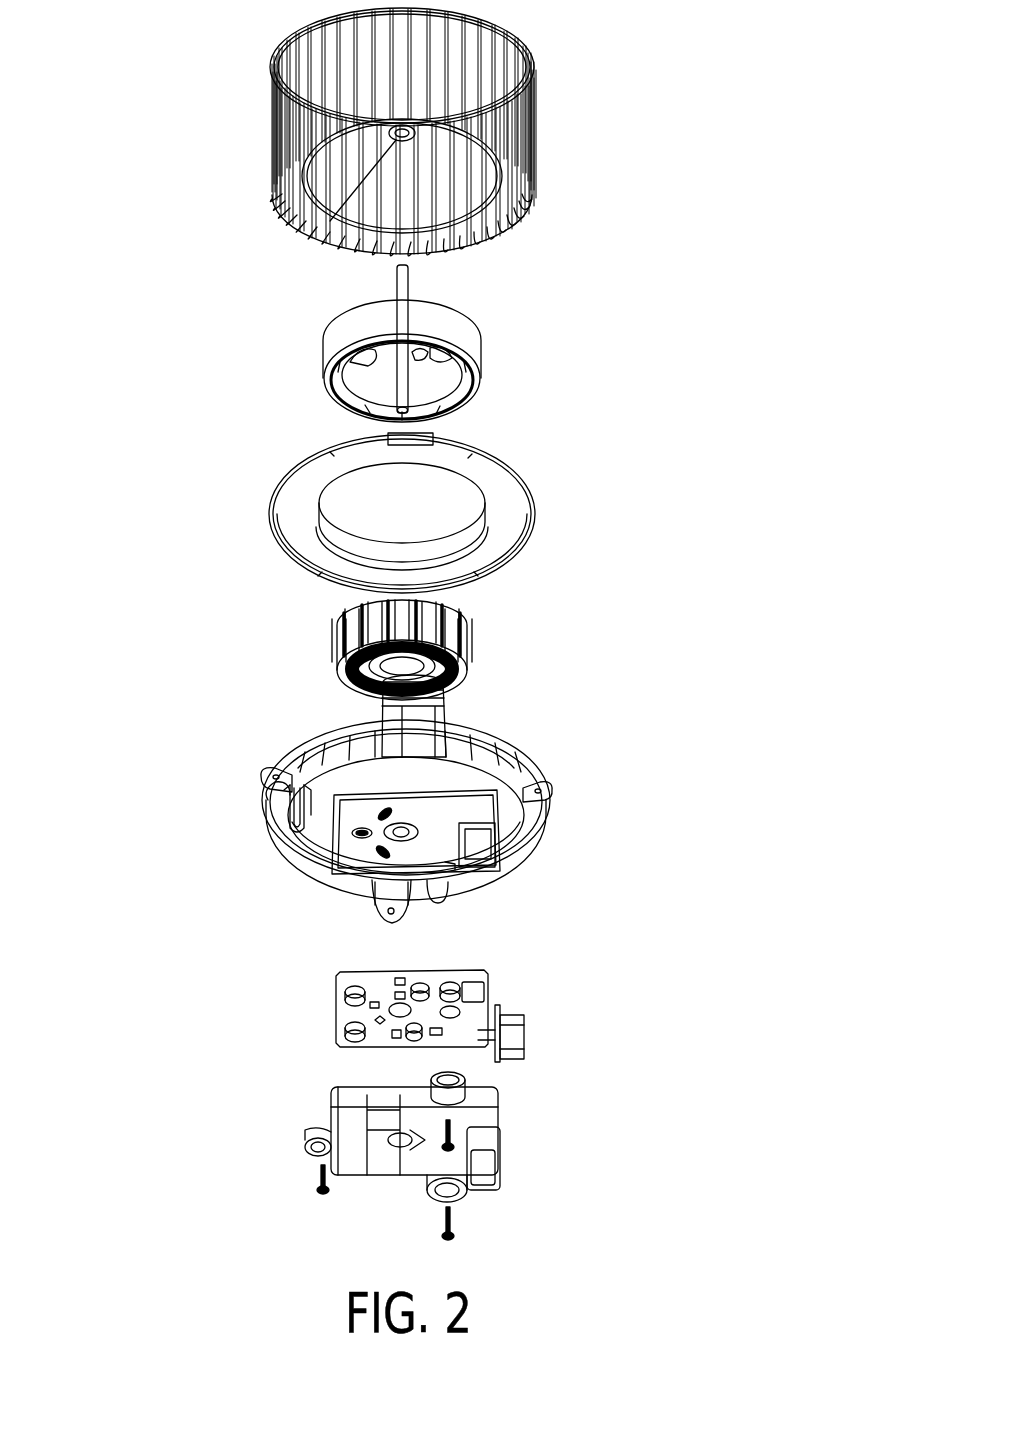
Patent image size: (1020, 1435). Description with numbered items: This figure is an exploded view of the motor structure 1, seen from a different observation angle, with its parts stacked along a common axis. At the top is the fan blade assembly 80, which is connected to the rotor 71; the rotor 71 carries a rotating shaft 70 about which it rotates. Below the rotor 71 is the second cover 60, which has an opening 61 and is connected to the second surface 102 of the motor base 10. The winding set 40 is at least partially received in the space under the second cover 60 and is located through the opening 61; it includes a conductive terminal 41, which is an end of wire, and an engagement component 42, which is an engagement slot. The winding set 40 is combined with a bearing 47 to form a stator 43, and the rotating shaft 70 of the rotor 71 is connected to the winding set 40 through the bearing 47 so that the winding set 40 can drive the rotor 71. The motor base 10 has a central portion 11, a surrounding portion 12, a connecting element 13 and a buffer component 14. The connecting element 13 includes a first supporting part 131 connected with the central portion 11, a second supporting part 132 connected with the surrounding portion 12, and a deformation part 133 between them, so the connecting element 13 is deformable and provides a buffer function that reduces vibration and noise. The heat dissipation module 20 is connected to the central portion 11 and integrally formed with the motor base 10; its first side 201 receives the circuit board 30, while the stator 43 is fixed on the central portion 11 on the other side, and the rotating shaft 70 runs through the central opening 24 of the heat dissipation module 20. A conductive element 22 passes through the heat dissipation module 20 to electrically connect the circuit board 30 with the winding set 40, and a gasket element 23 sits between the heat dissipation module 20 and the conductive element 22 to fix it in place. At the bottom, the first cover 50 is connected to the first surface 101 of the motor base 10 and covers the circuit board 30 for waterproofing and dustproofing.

The motor structure 1 is at (790, 47).
The fan blade assembly 80 is at (515, 121).
The rotating shaft 70 is at (402, 282).
The rotor 71 is at (467, 324).
The second cover 60 is at (417, 505).
The opening 61 is at (390, 507).
The winding set 40 is at (423, 661).
The conductive terminal 41 is at (467, 670).
The engagement component 42 is at (463, 650).
The stator 43 is at (331, 616).
The bearing 47 is at (467, 672).
The motor base 10 is at (368, 802).
The central portion 11 is at (317, 757).
The surrounding portion 12 is at (350, 743).
The second surface 102 is at (490, 740).
The buffer component 14 is at (300, 808).
The central opening 24 is at (415, 828).
The connecting element 13 is at (195, 835).
The first supporting part 131 is at (277, 800).
The second supporting part 132 is at (267, 813).
The deformation part 133 is at (270, 820).
The heat dissipation module 20 is at (429, 863).
The first surface 101 is at (487, 840).
The first side 201 is at (437, 852).
The conductive element 22 is at (372, 845).
The gasket element 23 is at (377, 853).
The circuit board 30 is at (502, 988).
The first cover 50 is at (502, 1126).